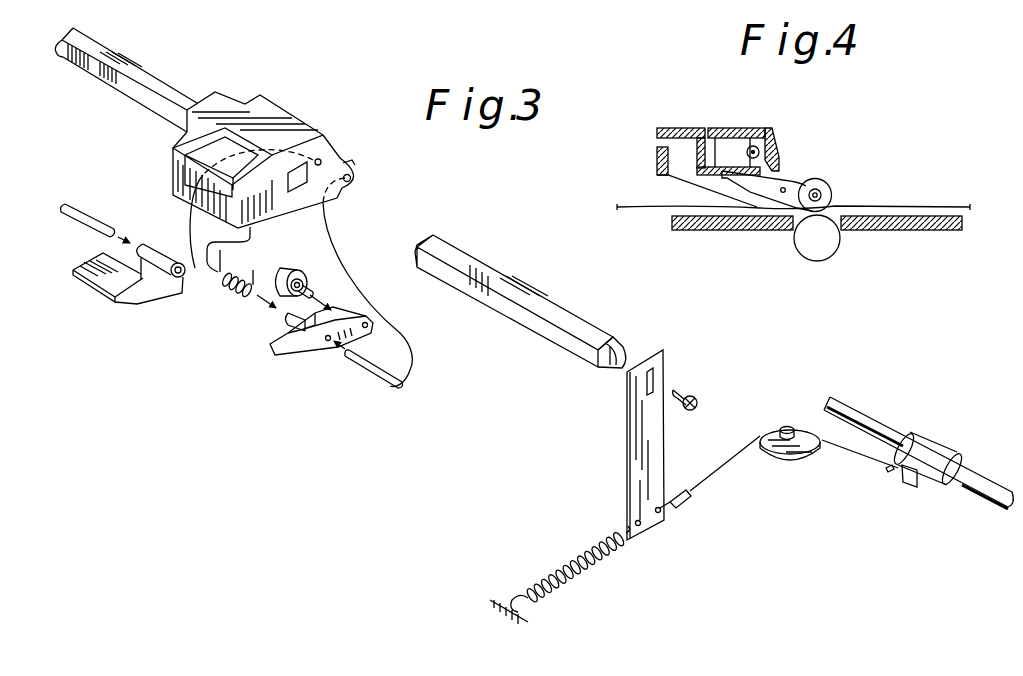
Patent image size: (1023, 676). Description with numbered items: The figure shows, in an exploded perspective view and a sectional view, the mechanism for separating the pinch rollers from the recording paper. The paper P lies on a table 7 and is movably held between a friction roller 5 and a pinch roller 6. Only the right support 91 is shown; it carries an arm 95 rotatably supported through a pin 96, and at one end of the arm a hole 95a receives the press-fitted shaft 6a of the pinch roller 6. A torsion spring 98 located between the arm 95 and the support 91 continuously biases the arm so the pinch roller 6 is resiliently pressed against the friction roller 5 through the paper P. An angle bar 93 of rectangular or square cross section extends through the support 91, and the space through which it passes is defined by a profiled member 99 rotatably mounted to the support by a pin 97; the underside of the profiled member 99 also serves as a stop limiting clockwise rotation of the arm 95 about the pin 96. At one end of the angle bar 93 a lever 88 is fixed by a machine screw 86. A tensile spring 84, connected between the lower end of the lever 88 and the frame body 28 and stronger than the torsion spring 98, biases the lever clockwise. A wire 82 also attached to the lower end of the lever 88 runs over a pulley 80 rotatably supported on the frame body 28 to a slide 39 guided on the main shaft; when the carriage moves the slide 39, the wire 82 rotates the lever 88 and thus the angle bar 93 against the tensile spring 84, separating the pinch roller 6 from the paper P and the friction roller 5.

In FIG. 3, the support 91 is at (303, 137).
In FIG. 4, the support 91 is at (771, 129).
In FIG. 3, the angle bar 93 is at (563, 323).
In FIG. 4, the angle bar 93 is at (733, 130).
In FIG. 3, the pin 97 is at (90, 207).
In FIG. 3, the profiled member 99 is at (113, 288).
In FIG. 4, the profiled member 99 is at (677, 128).
In FIG. 3, the torsion spring 98 is at (247, 297).
In FIG. 3, the pinch roller 6 is at (286, 270).
In FIG. 4, the pinch roller 6 is at (828, 182).
In FIG. 3, the shaft 6a is at (308, 288).
In FIG. 3, the arm 95 is at (307, 350).
In FIG. 4, the arm 95 is at (800, 183).
In FIG. 3, the hole 95a is at (367, 328).
In FIG. 4, the hole 95a is at (822, 193).
In FIG. 3, the pin 96 is at (373, 381).
In FIG. 4, the pin 96 is at (782, 193).
In FIG. 3, the machine screw 86 is at (696, 398).
In FIG. 3, the lever 88 is at (657, 443).
In FIG. 3, the wire 82 is at (732, 460).
In FIG. 3, the pulley 80 is at (798, 452).
In FIG. 3, the slide 39 is at (927, 453).
In FIG. 3, the tensile spring 84 is at (583, 570).
In FIG. 3, the frame body 28 is at (490, 637).
In FIG. 4, the paper P is at (920, 205).
In FIG. 4, the friction roller 5 is at (826, 243).
In FIG. 4, the table 7 is at (895, 230).